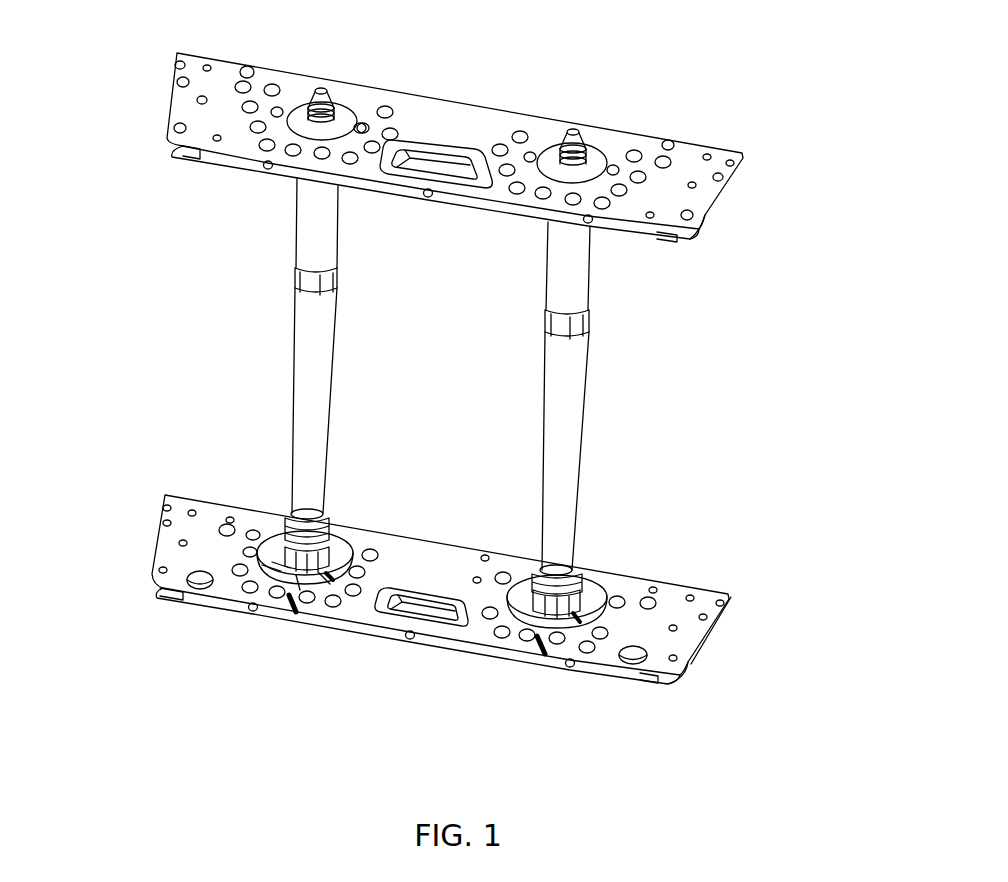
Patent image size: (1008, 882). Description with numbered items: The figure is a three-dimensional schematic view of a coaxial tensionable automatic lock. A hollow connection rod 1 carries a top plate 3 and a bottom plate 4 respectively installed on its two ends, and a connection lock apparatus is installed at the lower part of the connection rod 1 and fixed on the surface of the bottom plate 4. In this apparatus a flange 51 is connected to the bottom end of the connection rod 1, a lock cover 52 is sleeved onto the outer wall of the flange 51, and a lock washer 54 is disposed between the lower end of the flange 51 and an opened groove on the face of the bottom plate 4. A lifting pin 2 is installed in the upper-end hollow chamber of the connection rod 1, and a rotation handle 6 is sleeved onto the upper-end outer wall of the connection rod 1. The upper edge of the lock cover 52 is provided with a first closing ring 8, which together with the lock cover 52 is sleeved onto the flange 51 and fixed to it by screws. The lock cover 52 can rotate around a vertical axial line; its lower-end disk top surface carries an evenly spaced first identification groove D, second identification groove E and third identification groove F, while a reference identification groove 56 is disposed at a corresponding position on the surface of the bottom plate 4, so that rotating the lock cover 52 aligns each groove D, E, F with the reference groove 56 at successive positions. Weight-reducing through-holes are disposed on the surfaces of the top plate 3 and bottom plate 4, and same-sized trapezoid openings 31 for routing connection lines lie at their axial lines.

The hollow connection rod 1 is at (562, 375).
The lifting pin 2 is at (578, 143).
The top plate 3 is at (713, 217).
The bottom plate 4 is at (150, 570).
The rotation handle 6 is at (316, 235).
The first closing ring 8 is at (583, 575).
The trapezoid opening 31 is at (435, 170).
The flange 51 is at (540, 568).
The lock cover 52 is at (567, 603).
The lock washer 54 is at (655, 602).
The reference identification groove 56 is at (287, 608).
The first identification groove D is at (263, 567).
The second identification groove E is at (292, 593).
The third identification groove F is at (302, 582).